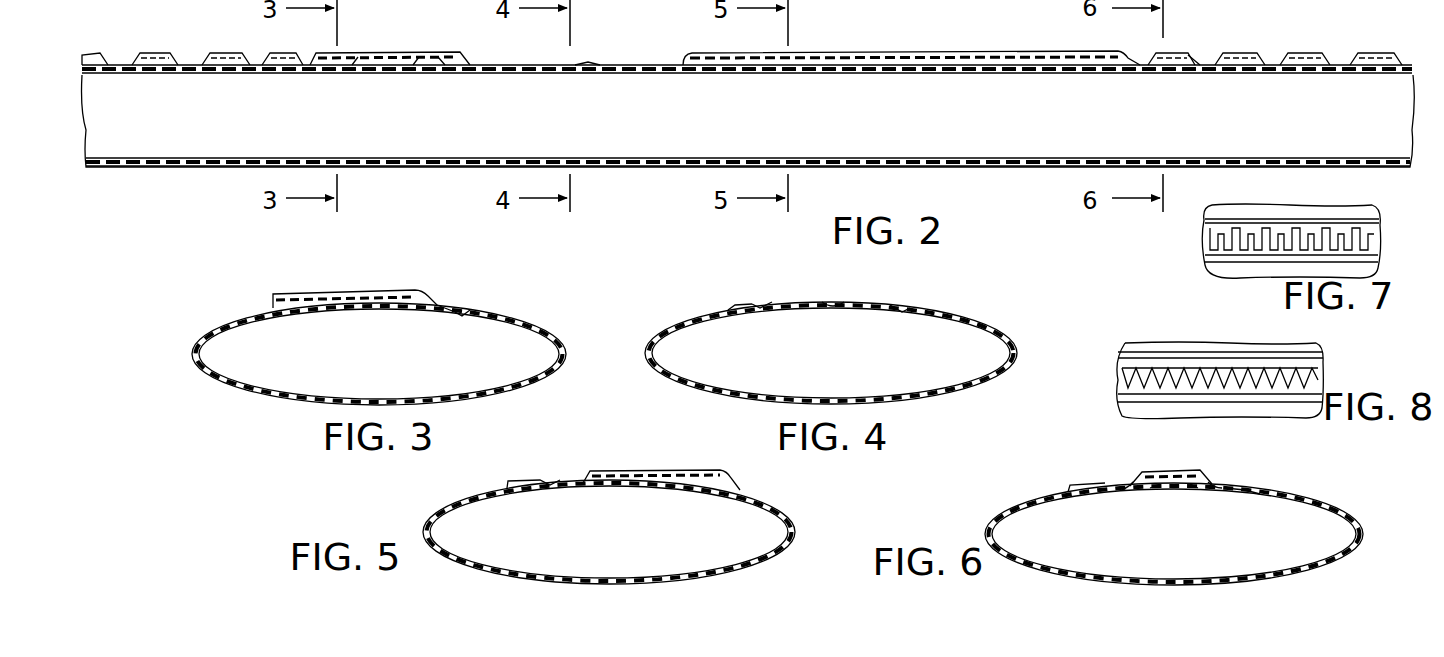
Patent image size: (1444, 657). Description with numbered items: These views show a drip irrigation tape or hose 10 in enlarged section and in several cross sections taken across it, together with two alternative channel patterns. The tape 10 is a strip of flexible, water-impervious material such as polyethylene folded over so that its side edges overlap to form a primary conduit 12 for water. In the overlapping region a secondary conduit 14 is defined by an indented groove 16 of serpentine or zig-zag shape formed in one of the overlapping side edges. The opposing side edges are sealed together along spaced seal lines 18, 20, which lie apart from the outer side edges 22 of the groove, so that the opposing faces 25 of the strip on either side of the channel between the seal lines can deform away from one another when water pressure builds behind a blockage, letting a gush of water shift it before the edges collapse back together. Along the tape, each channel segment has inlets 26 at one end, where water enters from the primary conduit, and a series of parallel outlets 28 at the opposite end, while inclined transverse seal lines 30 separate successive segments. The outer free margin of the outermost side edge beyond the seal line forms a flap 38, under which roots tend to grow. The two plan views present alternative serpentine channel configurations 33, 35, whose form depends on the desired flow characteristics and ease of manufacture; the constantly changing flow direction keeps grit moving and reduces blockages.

In FIG. 2, the drip irrigation tape or hose 10 is at (834, 50).
In FIG. 3, the drip irrigation tape or hose 10 is at (373, 327).
In FIG. 4, the drip irrigation tape or hose 10 is at (834, 330).
In FIG. 2, the primary conduit 12 is at (878, 127).
In FIG. 3, the primary conduit 12 is at (380, 367).
In FIG. 4, the primary conduit 12 is at (845, 367).
In FIG. 5, the primary conduit 12 is at (611, 545).
In FIG. 6, the primary conduit 12 is at (1235, 556).
In FIG. 2, the secondary conduit 14 is at (160, 60).
In FIG. 6, the secondary conduit 14 is at (1183, 476).
In FIG. 2, the indented groove 16 is at (1196, 58).
In FIG. 3, the seal line 18 is at (452, 310).
In FIG. 4, the seal line 18 is at (896, 305).
In FIG. 6, the seal line 18 is at (1240, 486).
In FIG. 4, the seal line 20 is at (766, 304).
In FIG. 5, the seal line 20 is at (550, 484).
In FIG. 6, the seal line 20 is at (1108, 483).
In FIG. 6, the outer side edges of the groove 22 is at (1135, 481).
In FIG. 6, the opposing faces 25 is at (1184, 490).
In FIG. 5, the inlets 26 is at (665, 483).
In FIG. 2, the outlets 28 is at (440, 58).
In FIG. 3, the outlets 28 is at (335, 300).
In FIG. 2, the inclined transverse seal lines 30 is at (592, 64).
In FIG. 4, the inclined transverse seal lines 30 is at (833, 302).
In FIG. 7, the alternative serpentine channel configuration 33 is at (1210, 248).
In FIG. 8, the further serpentine channel configuration 35 is at (1183, 366).
In FIG. 4, the flap 38 is at (740, 306).